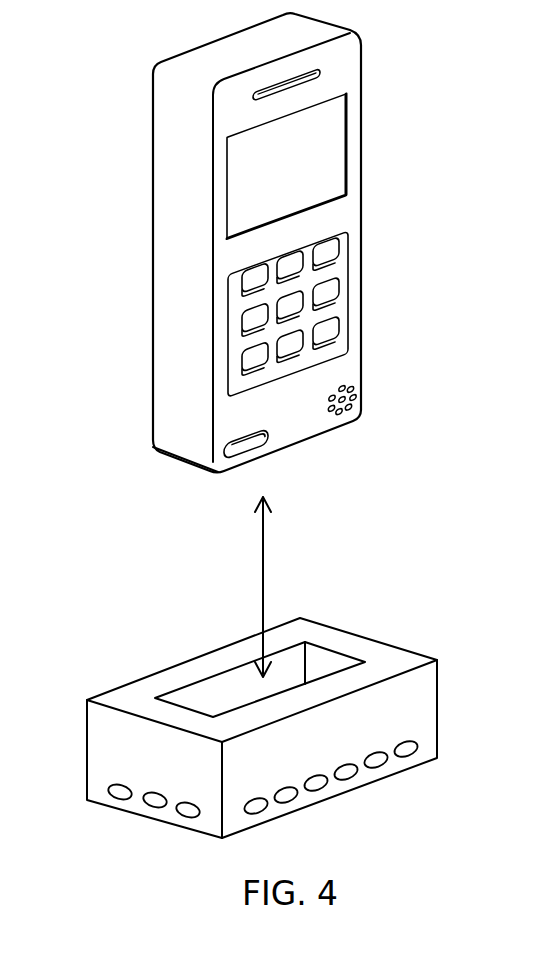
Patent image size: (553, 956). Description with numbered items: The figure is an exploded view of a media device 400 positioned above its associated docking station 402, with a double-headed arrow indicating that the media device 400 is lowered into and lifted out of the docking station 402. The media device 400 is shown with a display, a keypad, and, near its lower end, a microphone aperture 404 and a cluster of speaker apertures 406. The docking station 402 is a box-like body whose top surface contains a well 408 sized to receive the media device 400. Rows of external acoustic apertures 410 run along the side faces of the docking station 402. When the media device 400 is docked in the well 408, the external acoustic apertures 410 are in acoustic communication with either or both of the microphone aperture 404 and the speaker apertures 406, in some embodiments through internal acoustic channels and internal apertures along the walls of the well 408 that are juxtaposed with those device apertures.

The media device 400 is at (362, 212).
The docking station 402 is at (432, 693).
The microphone aperture 404 is at (225, 443).
The speaker apertures 406 is at (350, 397).
The well 408 is at (183, 697).
The external acoustic apertures 410 is at (152, 807).